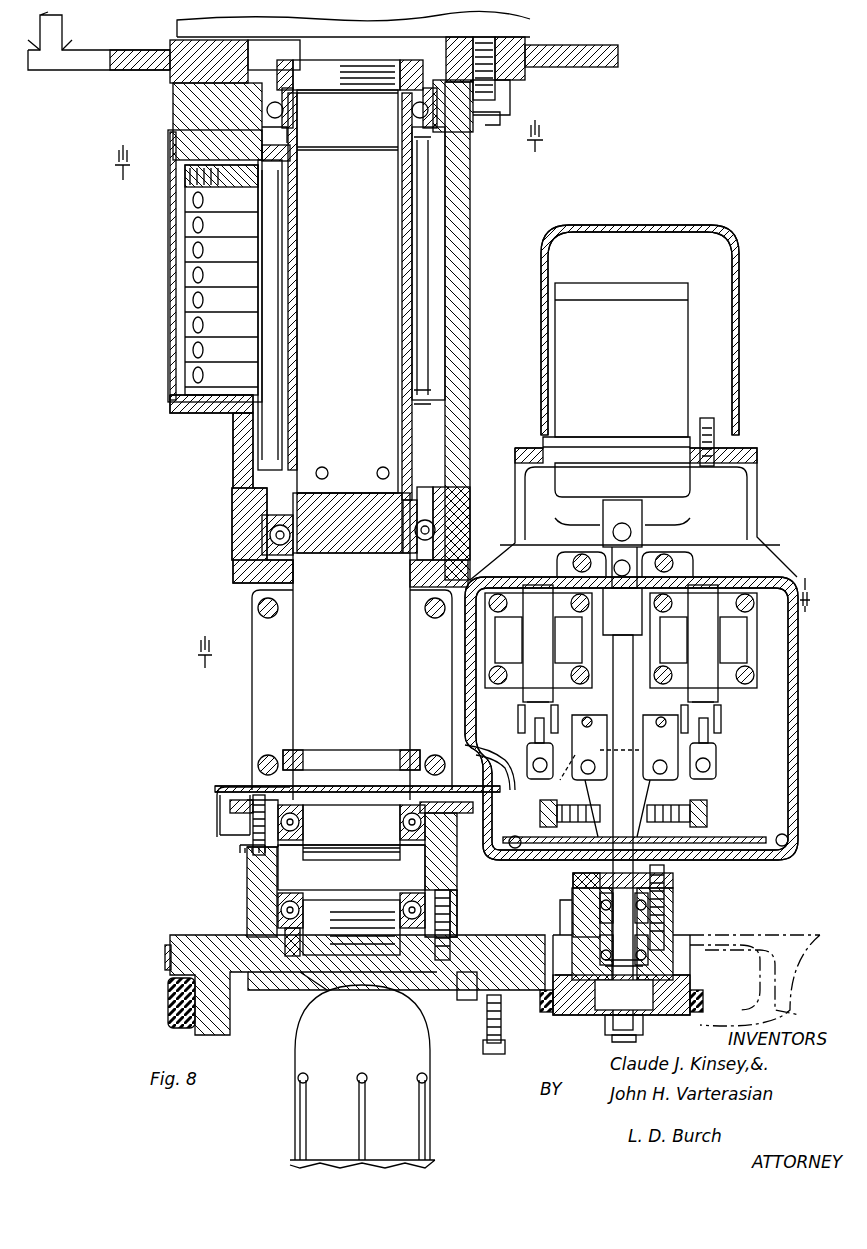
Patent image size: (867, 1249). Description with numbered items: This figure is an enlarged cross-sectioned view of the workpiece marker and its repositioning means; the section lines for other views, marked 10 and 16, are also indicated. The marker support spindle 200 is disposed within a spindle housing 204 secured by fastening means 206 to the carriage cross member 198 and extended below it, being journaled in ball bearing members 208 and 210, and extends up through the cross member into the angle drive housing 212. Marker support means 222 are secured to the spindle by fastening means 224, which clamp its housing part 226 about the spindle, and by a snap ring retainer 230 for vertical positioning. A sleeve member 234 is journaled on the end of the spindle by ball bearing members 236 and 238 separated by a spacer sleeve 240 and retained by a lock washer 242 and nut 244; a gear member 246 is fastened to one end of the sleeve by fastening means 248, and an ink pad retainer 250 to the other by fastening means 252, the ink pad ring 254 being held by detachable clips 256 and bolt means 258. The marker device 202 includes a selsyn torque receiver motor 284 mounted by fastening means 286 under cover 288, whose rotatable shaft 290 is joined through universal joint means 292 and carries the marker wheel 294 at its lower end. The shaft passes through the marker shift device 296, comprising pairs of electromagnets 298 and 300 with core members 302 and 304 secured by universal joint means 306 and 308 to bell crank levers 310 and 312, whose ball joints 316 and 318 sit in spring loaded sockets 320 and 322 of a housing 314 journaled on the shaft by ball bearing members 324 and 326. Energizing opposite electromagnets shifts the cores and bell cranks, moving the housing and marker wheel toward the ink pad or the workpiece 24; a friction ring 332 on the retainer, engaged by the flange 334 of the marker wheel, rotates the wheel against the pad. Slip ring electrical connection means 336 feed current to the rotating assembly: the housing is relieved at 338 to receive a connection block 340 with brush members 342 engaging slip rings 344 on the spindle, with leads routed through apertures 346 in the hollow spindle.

The section line 10- 10 is at (178, 668).
The section line 16- 16 is at (317, 159).
The workpiece 24 is at (760, 1002).
The carriage cross member 198 is at (588, 58).
The marker support spindle 200 is at (388, 200).
The marker device 202 is at (762, 525).
The spindle housing 204 is at (455, 258).
The fastening means 206 is at (492, 108).
The ball bearing member 208 is at (462, 112).
The ball bearing member 210 is at (270, 535).
The angle drive housing 212 is at (478, 20).
The marker support means 222 is at (262, 723).
The fastening means 224 is at (258, 607).
The housing part 226 is at (268, 690).
The snap ring retainer 230 is at (293, 752).
The sleeve member 234 is at (450, 878).
The ball bearing member 236 is at (408, 826).
The ball bearing member 238 is at (452, 915).
The spacer sleeve 240 is at (300, 868).
The lock washer 242 is at (282, 928).
The nut 244 is at (312, 935).
The gear member 246 is at (217, 812).
The fastening means 248 is at (255, 795).
The ink pad retainer 250 is at (215, 935).
The fastening means 252 is at (440, 990).
The ink pad ring 254 is at (167, 1010).
The detachable clips 256 is at (487, 1040).
The bolt means 258 is at (494, 1054).
The selsyn torque receiver motor 284 is at (665, 308).
The fastening means 286 is at (708, 418).
The cover 288 is at (739, 265).
The rotatable shaft 290 is at (618, 730).
The universal joint means 292 is at (640, 548).
The marker wheel 294 is at (598, 1012).
The marker shift device 296 is at (738, 840).
The electromagnets 298 is at (502, 652).
The electromagnets 300 is at (704, 656).
The core member 302 is at (485, 646).
The core member 304 is at (692, 685).
The universal joint means 306 is at (538, 742).
The universal joint means 308 is at (716, 732).
The bell crank lever 310 is at (515, 770).
The bell crank lever 312 is at (716, 762).
The housing 314 is at (595, 868).
The ball joint 316 is at (590, 810).
The ball joint 318 is at (660, 845).
The spring loaded socket 320 is at (572, 845).
The spring loaded socket 322 is at (690, 815).
The ball bearing member 324 is at (650, 905).
The ball bearing member 326 is at (645, 960).
The friction ring 332 is at (165, 960).
The flange 334 is at (558, 940).
The slip ring electrical connection means 336 is at (168, 355).
The relief 338 is at (195, 413).
The connection block 340 is at (192, 302).
The brush members 342 is at (290, 170).
The slip rings 344 is at (292, 285).
The apertures 346 is at (382, 466).